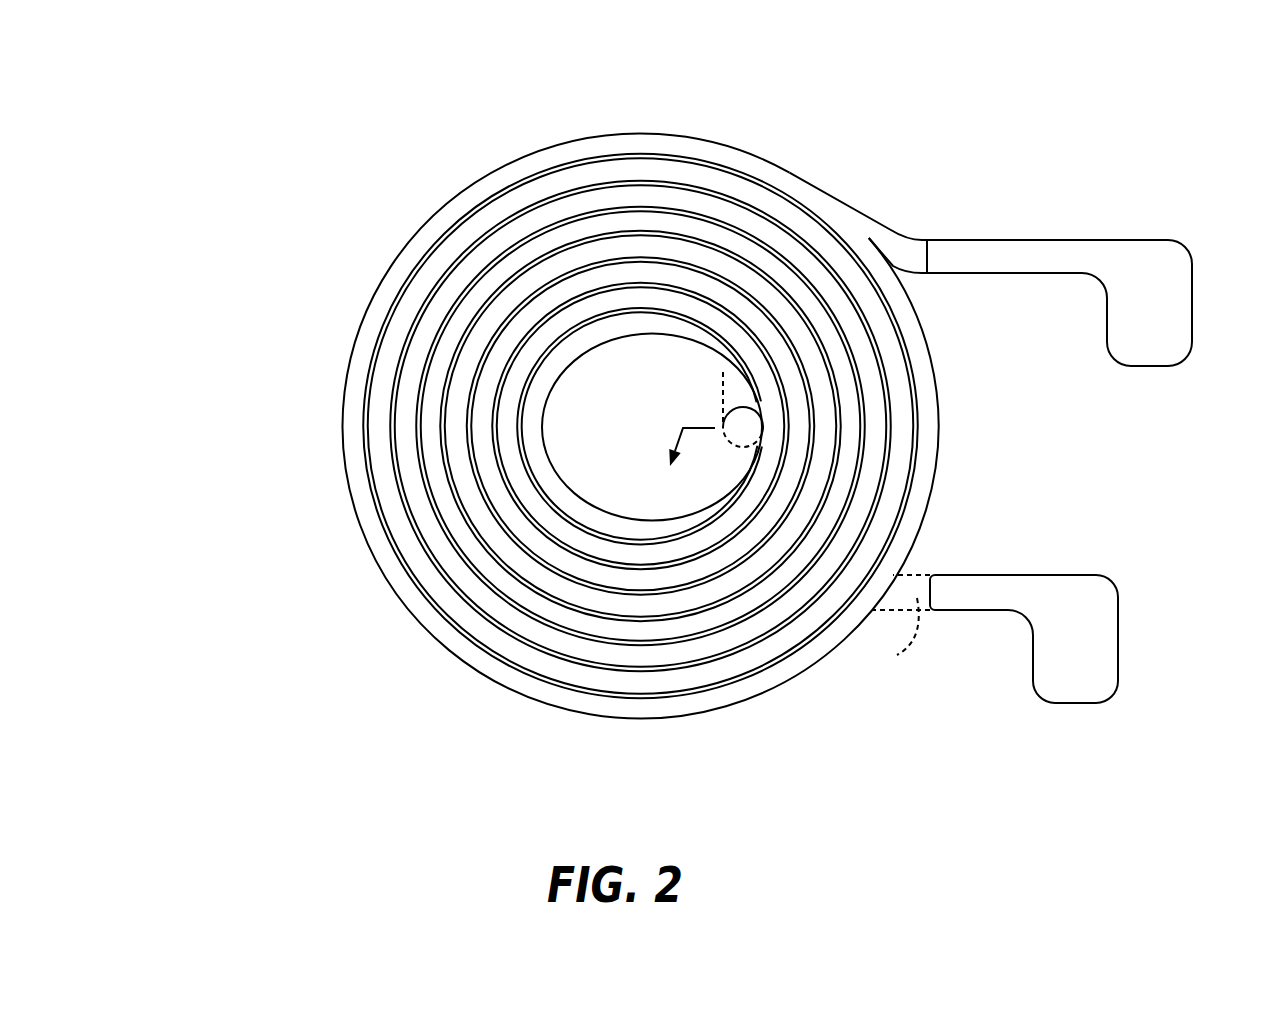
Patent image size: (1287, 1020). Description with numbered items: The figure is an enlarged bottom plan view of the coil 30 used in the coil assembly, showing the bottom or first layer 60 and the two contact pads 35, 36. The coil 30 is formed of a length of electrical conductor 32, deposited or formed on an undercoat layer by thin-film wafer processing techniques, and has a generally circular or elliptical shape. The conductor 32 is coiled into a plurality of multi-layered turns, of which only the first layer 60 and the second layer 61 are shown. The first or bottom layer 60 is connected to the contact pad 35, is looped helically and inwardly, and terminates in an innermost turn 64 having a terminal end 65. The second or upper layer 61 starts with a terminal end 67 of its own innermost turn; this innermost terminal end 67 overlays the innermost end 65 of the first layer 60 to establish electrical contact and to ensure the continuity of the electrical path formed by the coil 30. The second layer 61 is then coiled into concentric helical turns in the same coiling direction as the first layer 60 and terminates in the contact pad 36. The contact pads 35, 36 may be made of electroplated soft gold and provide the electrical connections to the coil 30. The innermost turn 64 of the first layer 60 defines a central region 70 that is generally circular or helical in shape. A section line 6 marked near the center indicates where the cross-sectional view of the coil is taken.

The coil 30 is at (269, 243).
The electrical conductor 32 is at (735, 150).
The first layer 60 is at (1023, 250).
The contact pad 35 is at (1177, 313).
The contact pad 36 is at (1106, 644).
The second layer 61 is at (1021, 639).
The innermost turn 64 is at (530, 441).
The terminal end 65 is at (740, 418).
The terminal end 67 is at (759, 386).
The central region 70 is at (634, 467).
The section line 6 is at (686, 463).